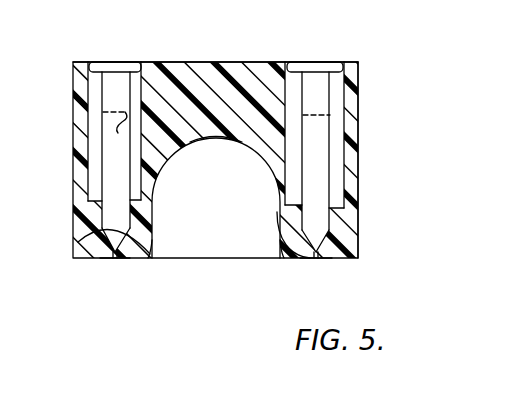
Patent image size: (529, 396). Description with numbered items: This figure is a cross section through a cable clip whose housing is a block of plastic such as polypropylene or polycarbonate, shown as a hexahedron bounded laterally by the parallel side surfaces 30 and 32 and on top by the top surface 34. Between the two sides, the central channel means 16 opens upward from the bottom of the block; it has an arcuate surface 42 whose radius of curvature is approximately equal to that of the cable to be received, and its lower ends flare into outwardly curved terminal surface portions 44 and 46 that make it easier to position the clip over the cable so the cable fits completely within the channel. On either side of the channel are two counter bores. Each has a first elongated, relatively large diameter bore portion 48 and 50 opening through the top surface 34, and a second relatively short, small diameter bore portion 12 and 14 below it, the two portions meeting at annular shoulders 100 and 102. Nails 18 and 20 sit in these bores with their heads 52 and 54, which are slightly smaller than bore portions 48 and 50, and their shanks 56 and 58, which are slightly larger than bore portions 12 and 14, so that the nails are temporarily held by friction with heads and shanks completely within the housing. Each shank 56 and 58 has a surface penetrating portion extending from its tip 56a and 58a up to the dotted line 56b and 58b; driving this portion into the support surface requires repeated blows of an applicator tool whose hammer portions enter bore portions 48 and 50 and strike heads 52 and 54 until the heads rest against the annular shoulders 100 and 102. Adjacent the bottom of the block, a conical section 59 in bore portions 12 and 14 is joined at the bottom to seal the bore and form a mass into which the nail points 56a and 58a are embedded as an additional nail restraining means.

The bore portion 12 is at (100, 220).
The bore portion 14 is at (332, 210).
The central channel means 16 is at (160, 175).
The nail 18 is at (110, 167).
The nail 20 is at (320, 147).
The side surface 30 is at (72, 77).
The side surface 32 is at (362, 72).
The top surface 34 is at (205, 62).
The arcuate surface 42 is at (222, 140).
The outwardly curved terminal surface portion 44 is at (148, 252).
The outwardly curved terminal surface portion 46 is at (279, 247).
The bore portion 48 is at (80, 113).
The bore portion 50 is at (358, 98).
The head 52 is at (140, 62).
The head 54 is at (332, 62).
The nail shank 56 is at (90, 230).
The tip 56a is at (117, 260).
The dotted line 56b is at (118, 133).
The nail shank 58 is at (332, 232).
The tip 58a is at (313, 260).
The dotted line 58b is at (307, 147).
The conical section 59 is at (113, 258).
The annular shoulder 100 is at (97, 202).
The annular shoulder 102 is at (352, 174).